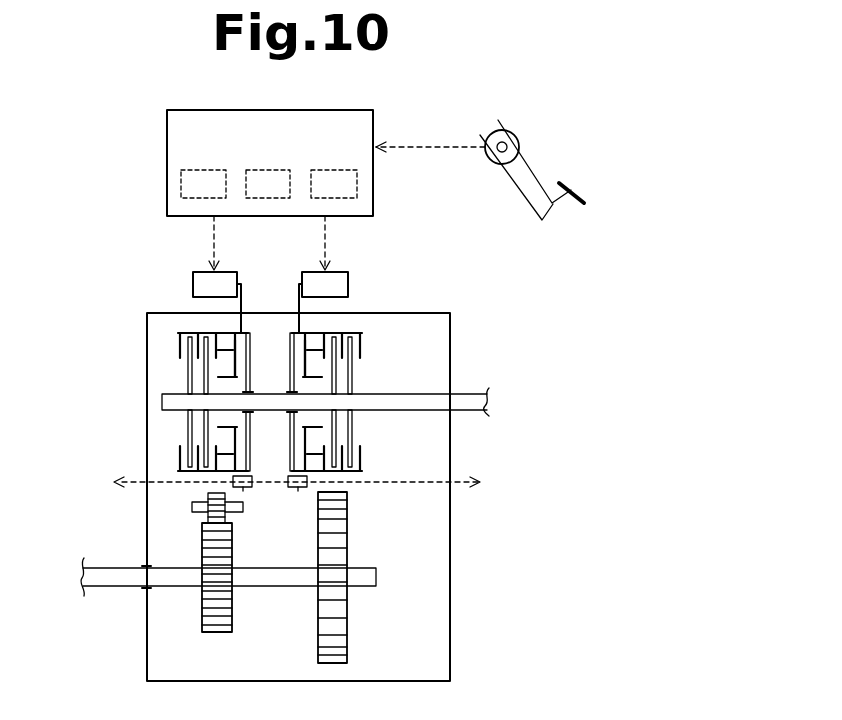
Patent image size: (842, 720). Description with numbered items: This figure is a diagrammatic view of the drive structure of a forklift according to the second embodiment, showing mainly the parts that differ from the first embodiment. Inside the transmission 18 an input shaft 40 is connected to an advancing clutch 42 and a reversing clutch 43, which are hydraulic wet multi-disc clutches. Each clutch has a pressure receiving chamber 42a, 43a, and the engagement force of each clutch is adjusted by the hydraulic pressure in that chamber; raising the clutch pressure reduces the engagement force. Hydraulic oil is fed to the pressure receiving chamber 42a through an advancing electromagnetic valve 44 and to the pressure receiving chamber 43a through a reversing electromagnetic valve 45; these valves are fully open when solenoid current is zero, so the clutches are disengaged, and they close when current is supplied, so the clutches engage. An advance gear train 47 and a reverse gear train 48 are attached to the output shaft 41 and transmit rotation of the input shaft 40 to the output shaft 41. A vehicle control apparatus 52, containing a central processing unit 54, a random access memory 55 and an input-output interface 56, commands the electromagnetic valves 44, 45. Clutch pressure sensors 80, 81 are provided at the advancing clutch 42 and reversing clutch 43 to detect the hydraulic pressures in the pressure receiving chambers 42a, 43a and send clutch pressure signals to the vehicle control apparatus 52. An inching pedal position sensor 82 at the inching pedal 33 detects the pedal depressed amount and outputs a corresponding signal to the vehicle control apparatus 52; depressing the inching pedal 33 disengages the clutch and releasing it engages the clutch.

The transmission 18 is at (452, 636).
The inching pedal 33 is at (528, 167).
The input shaft 40 is at (398, 411).
The output shaft 41 is at (172, 587).
The advancing clutch 42 is at (372, 355).
The pressure receiving chamber 42a is at (295, 353).
The reversing clutch 43 is at (168, 347).
The pressure receiving chamber 43a is at (240, 353).
The advancing electromagnetic valve 44 is at (348, 284).
The reversing electromagnetic valve 45 is at (193, 284).
The advance gear train 47 is at (347, 618).
The reverse gear train 48 is at (232, 605).
The vehicle control apparatus 52 is at (167, 128).
The central processing unit 54 is at (203, 185).
The random access memory 55 is at (268, 185).
The input-output interface 56 is at (334, 185).
The clutch pressure sensor 80 is at (243, 489).
The clutch pressure sensor 81 is at (292, 489).
The inching pedal position sensor 82 is at (487, 160).